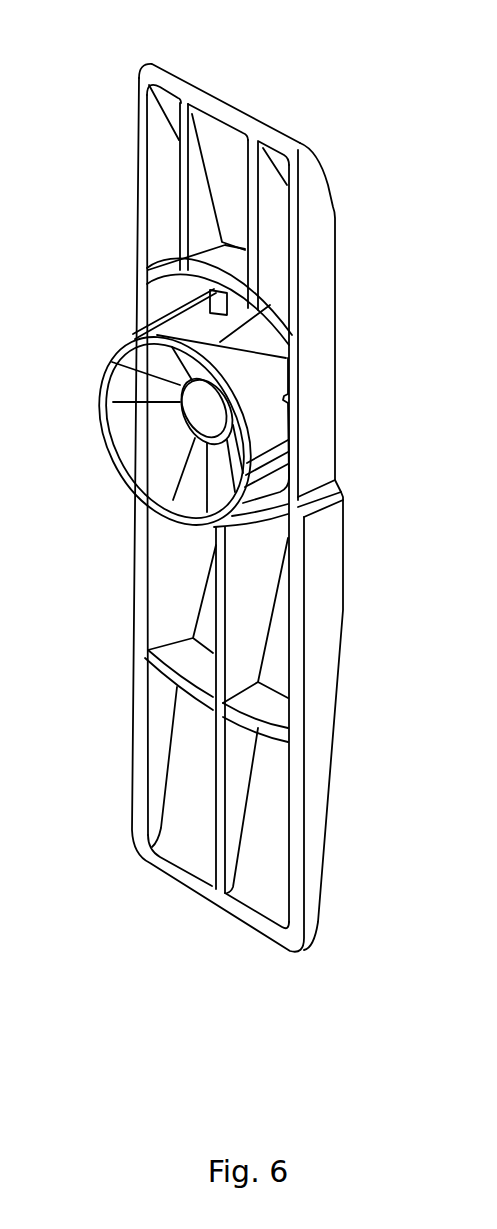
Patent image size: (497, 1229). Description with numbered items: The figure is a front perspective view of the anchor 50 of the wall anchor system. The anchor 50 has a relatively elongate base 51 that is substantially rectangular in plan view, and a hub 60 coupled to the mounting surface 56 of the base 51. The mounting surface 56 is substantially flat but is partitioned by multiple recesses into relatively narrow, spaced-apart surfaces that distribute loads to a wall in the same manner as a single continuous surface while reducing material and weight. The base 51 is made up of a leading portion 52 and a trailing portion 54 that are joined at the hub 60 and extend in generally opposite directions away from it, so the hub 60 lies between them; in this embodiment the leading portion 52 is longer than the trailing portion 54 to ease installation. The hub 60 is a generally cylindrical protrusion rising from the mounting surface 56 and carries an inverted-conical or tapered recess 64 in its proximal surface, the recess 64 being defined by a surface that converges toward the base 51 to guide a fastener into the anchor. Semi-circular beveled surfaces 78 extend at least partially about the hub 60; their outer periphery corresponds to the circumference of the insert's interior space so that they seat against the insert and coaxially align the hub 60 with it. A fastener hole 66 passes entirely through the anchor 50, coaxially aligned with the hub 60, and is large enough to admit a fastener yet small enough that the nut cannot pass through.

The anchor 50 is at (349, 253).
The base 51 is at (344, 610).
The leading portion 52 is at (131, 800).
The trailing portion 54 is at (138, 118).
The mounting surface 56 is at (231, 117).
The hub 60 is at (278, 430).
The tapered recess 64 is at (112, 440).
The fastener hole 66 is at (115, 340).
The beveled surfaces 78 is at (289, 337).